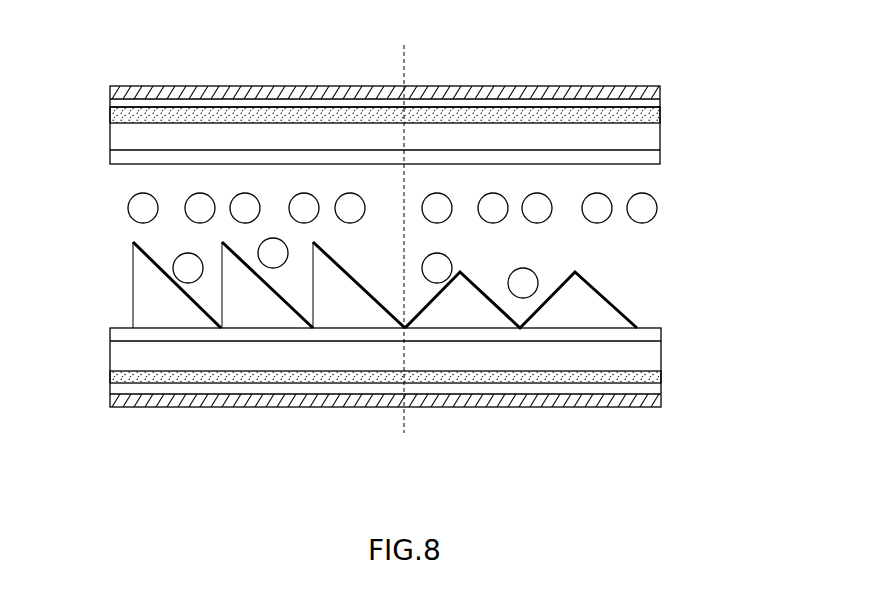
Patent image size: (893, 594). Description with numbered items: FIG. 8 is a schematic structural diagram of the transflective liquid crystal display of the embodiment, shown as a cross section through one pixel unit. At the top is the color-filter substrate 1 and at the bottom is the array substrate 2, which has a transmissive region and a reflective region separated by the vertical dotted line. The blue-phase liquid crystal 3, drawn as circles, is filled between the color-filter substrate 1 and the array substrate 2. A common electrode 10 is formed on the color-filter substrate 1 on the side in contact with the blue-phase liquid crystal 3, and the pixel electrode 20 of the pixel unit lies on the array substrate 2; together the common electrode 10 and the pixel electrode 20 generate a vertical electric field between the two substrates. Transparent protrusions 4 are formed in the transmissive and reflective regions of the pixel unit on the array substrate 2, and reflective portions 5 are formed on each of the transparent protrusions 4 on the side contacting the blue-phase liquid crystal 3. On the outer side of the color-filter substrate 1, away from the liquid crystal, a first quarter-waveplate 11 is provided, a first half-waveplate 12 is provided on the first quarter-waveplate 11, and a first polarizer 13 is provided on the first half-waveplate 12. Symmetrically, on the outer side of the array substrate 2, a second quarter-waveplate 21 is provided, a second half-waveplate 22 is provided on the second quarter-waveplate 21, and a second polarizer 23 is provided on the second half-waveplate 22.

The color-filter substrate 1 is at (432, 82).
The common electrode 10 is at (660, 160).
The first quarter-waveplate 11 is at (428, 118).
The first half-waveplate 12 is at (483, 103).
The first polarizer 13 is at (537, 92).
The array substrate 2 is at (427, 380).
The pixel electrode 20 is at (661, 328).
The second quarter-waveplate 21 is at (486, 373).
The second half-waveplate 22 is at (543, 387).
The second polarizer 23 is at (605, 401).
The blue-phase liquid crystal 3 is at (655, 200).
The transparent protrusions 4 is at (143, 293).
The reflective portions 5 is at (605, 297).